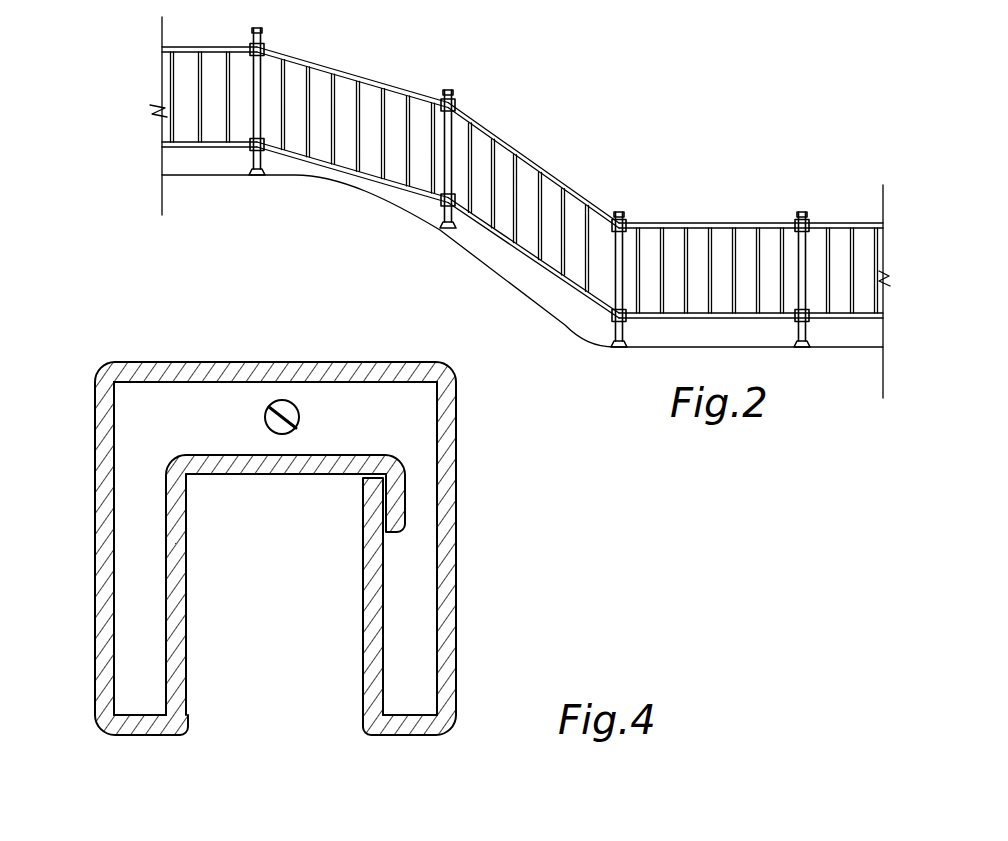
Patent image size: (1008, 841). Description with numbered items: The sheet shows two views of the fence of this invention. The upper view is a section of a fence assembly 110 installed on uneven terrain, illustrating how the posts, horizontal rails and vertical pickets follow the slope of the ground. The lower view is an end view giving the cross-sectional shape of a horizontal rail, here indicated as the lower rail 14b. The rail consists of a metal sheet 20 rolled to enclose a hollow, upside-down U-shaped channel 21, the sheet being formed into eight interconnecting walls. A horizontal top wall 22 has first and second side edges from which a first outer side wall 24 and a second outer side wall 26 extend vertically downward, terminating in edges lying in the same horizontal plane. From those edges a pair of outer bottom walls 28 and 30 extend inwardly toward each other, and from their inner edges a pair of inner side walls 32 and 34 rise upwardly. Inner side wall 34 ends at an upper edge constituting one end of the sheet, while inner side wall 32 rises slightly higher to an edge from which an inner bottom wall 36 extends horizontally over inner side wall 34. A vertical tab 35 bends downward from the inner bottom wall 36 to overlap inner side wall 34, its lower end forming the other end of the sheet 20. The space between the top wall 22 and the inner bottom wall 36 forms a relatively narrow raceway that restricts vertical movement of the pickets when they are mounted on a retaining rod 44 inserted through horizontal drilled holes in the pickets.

In FIG. 2, the fence assembly 110 is at (594, 203).
In FIG. 4, the metal sheet 20 is at (267, 539).
In FIG. 4, the U-shaped channel 21 is at (135, 400).
In FIG. 4, the top wall 22 is at (190, 362).
In FIG. 4, the first outer side wall 24 is at (95, 453).
In FIG. 4, the second outer side wall 26 is at (457, 538).
In FIG. 4, the outer bottom wall 28 is at (123, 723).
In FIG. 4, the outer bottom wall 30 is at (387, 730).
In FIG. 4, the inner side wall 32 is at (187, 643).
In FIG. 4, the inner side wall 34 is at (362, 638).
In FIG. 4, the vertical tab 35 is at (398, 497).
In FIG. 4, the inner bottom wall 36 is at (217, 476).
In FIG. 4, the retaining rod 44 is at (265, 420).
In FIG. 4, the lower rail 14b is at (105, 567).